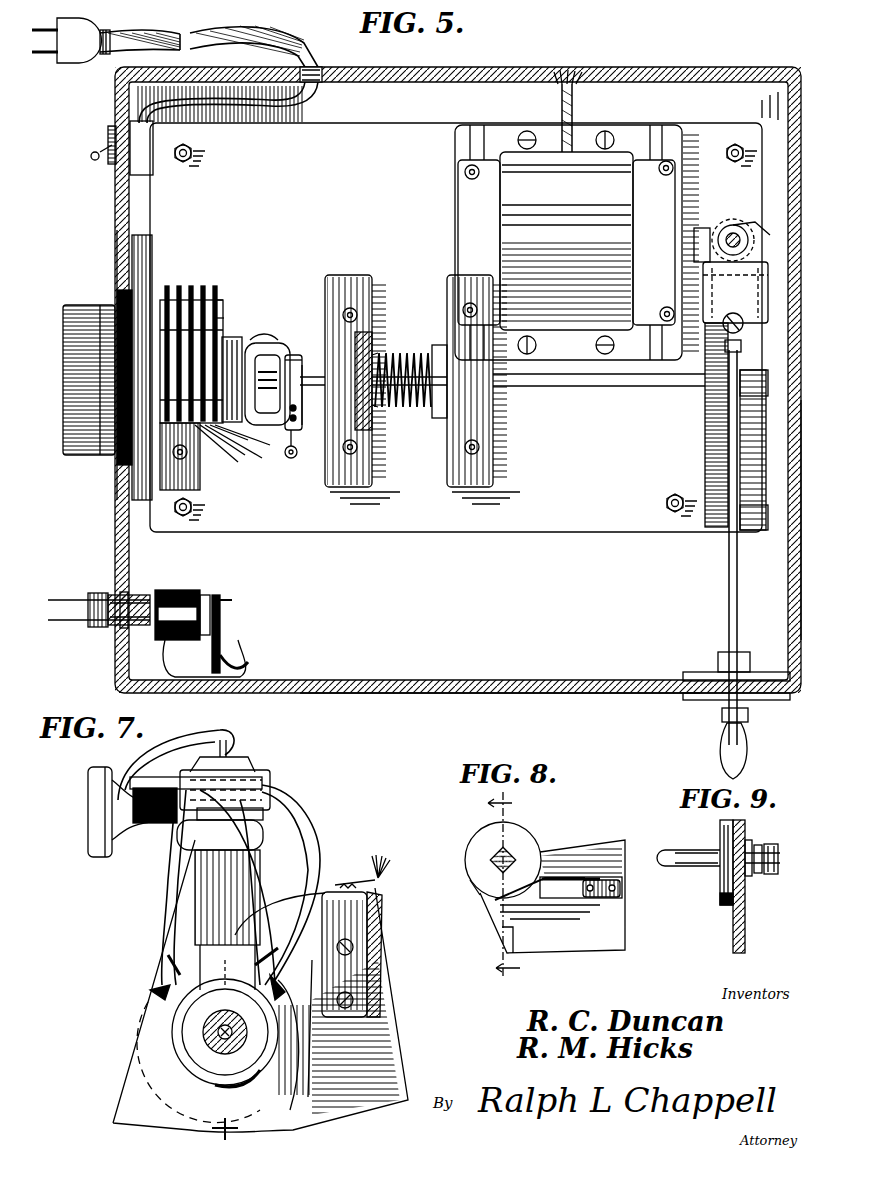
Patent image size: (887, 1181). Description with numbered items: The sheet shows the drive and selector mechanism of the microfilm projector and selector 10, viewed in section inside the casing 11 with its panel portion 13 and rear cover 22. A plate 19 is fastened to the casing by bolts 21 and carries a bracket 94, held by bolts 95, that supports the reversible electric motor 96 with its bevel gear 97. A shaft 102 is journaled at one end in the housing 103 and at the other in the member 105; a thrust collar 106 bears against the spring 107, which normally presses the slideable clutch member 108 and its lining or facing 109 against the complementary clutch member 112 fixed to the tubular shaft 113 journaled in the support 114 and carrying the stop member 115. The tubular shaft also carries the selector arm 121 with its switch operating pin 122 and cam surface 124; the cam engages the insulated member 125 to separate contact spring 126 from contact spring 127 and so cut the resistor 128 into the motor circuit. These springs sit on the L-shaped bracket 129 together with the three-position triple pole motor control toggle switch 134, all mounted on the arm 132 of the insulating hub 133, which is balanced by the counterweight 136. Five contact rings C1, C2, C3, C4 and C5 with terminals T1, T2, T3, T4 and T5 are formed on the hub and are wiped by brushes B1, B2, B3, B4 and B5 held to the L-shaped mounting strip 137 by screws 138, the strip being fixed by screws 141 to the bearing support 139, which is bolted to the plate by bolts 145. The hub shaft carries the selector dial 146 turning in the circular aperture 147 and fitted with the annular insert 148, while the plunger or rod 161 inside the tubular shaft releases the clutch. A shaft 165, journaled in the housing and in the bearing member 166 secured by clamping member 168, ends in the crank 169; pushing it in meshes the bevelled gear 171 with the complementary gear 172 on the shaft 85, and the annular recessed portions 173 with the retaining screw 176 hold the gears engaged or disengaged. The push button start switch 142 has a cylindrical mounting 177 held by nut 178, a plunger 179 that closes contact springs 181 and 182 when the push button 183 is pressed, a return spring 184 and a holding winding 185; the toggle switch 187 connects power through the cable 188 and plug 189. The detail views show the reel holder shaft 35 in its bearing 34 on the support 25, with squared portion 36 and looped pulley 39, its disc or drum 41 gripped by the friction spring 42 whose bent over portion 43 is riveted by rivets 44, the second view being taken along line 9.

In FIG. 8, the line 9— 9 is at (511, 885).
In FIG. 5, the microfilm projector and selector 10 is at (561, 67).
In FIG. 5, the casing 11 is at (495, 693).
In FIG. 5, the panel portion 13 is at (117, 549).
In FIG. 5, the plate 19 is at (405, 124).
In FIG. 5, the bolts 21 is at (192, 154).
In FIG. 5, the rear cover 22 is at (790, 573).
In FIG. 8, the support 25 is at (598, 842).
In FIG. 9, the support 25 is at (745, 952).
In FIG. 9, the bearings 34 is at (750, 845).
In FIG. 9, the reel holder shafts 35 is at (778, 864).
In FIG. 8, the squared portion 36 is at (495, 857).
In FIG. 9, the squared portion 36 is at (690, 850).
In FIG. 9, the looped pulley 39 is at (758, 873).
In FIG. 8, the disc or drum 41 is at (522, 838).
In FIG. 9, the disc or drum 41 is at (720, 882).
In FIG. 8, the spring 42 is at (545, 880).
In FIG. 9, the spring 42 is at (724, 905).
In FIG. 8, the bent over portion 43 is at (600, 880).
In FIG. 8, the rivets 44 is at (612, 898).
In FIG. 5, the shaft 85 is at (733, 226).
In FIG. 5, the bracket 94 is at (645, 135).
In FIG. 5, the bolts 95 is at (472, 165).
In FIG. 5, the reversible electric motor 96 is at (548, 165).
In FIG. 5, the bevel gear 97 is at (705, 228).
In FIG. 5, the shaft 102 is at (610, 388).
In FIG. 5, the housing 103 is at (704, 429).
In FIG. 5, the member 105 is at (448, 479).
In FIG. 5, the thrust collar 106 is at (440, 418).
In FIG. 5, the spring 107 is at (425, 352).
In FIG. 5, the slideable clutch member 108 is at (380, 348).
In FIG. 5, the lining or facing 109 is at (380, 342).
In FIG. 5, the complementary clutch member 112 is at (357, 335).
In FIG. 7, the tubular shaft 113 is at (203, 1030).
In FIG. 5, the support 114 is at (331, 293).
In FIG. 5, the stop member 115 is at (297, 408).
In FIG. 7, the selector arm 121 is at (170, 915).
In FIG. 7, the switch operating pin 122 is at (262, 866).
In FIG. 5, the cam surface 124 is at (300, 345).
In FIG. 7, the cam surface 124 is at (263, 836).
In FIG. 7, the insulated member 125 is at (263, 813).
In FIG. 5, the contact spring 126 is at (297, 453).
In FIG. 7, the contact spring 126 is at (240, 800).
In FIG. 7, the contact spring 127 is at (150, 820).
In FIG. 5, the resistor 128 is at (291, 459).
In FIG. 7, the resistor 128 is at (88, 800).
In FIG. 5, the L-shaped bracket 129 is at (305, 338).
In FIG. 5, the arm 132 is at (263, 342).
In FIG. 7, the arm 132 is at (170, 938).
In FIG. 5, the hub 133 is at (238, 331).
In FIG. 7, the hub 133 is at (150, 1020).
In FIG. 5, the 3-position triple pole motor control toggle switch 134 is at (270, 350).
In FIG. 7, the 3-position triple pole motor control toggle switch 134 is at (235, 770).
In FIG. 7, the counterweight 136 is at (218, 1140).
In FIG. 5, the L-shaped mounting strip 137 is at (222, 320).
In FIG. 7, the L-shaped mounting strip 137 is at (368, 915).
In FIG. 5, the screws 138 is at (222, 305).
In FIG. 7, the screws 138 is at (348, 888).
In FIG. 5, the bearing support 139 is at (160, 300).
In FIG. 7, the bearing support 139 is at (395, 1048).
In FIG. 7, the screws 141 is at (353, 1000).
In FIG. 5, the push button start switch 142 is at (110, 625).
In FIG. 5, the bolts 145 is at (200, 470).
In FIG. 5, the selector dial 146 is at (100, 305).
In FIG. 5, the circular aperture 147 is at (122, 232).
In FIG. 5, the annular insert 148 is at (132, 455).
In FIG. 7, the plunger or rod 161 is at (250, 1028).
In FIG. 5, the shaft 165 is at (729, 573).
In FIG. 5, the bearing member 166 is at (718, 662).
In FIG. 5, the clamping member 168 is at (700, 701).
In FIG. 5, the crank 169 is at (752, 718).
In FIG. 5, the bevelled gear 171 is at (768, 251).
In FIG. 5, the complementary gear 172 is at (758, 222).
In FIG. 5, the annular recessed portions 173 is at (742, 348).
In FIG. 5, the retaining screw 176 is at (743, 326).
In FIG. 5, the cylindrical mounting 177 is at (166, 590).
In FIG. 5, the nut 178 is at (100, 596).
In FIG. 5, the plunger 179 is at (203, 595).
In FIG. 5, the contact spring 181 is at (217, 600).
In FIG. 5, the contact spring 182 is at (232, 600).
In FIG. 5, the push button 183 is at (88, 606).
In FIG. 5, the spring 184 is at (140, 595).
In FIG. 5, the winding 185 is at (202, 658).
In FIG. 5, the toggle switch 187 is at (107, 142).
In FIG. 5, the cable 188 is at (228, 34).
In FIG. 5, the plug 189 is at (70, 58).
In FIG. 5, the contact spring or brush B1 is at (167, 286).
In FIG. 5, the contact spring or brush B2 is at (179, 286).
In FIG. 5, the contact spring or brush B3 is at (192, 286).
In FIG. 5, the contact spring or brush B4 is at (204, 286).
In FIG. 5, the contact spring or brush B5 is at (216, 290).
In FIG. 7, the contact spring or brush B5 is at (292, 897).
In FIG. 5, the contact ring C1 is at (218, 450).
In FIG. 5, the contact ring C2 is at (226, 445).
In FIG. 5, the contact ring C3 is at (240, 447).
In FIG. 5, the contact ring C4 is at (236, 436).
In FIG. 5, the contact ring C5 is at (251, 439).
In FIG. 7, the contact ring C5 is at (150, 1040).
In FIG. 7, the terminal T1 is at (150, 988).
In FIG. 7, the terminal T2 is at (168, 957).
In FIG. 7, the terminal T3 is at (225, 985).
In FIG. 7, the terminal T4 is at (278, 950).
In FIG. 7, the terminal T5 is at (280, 978).